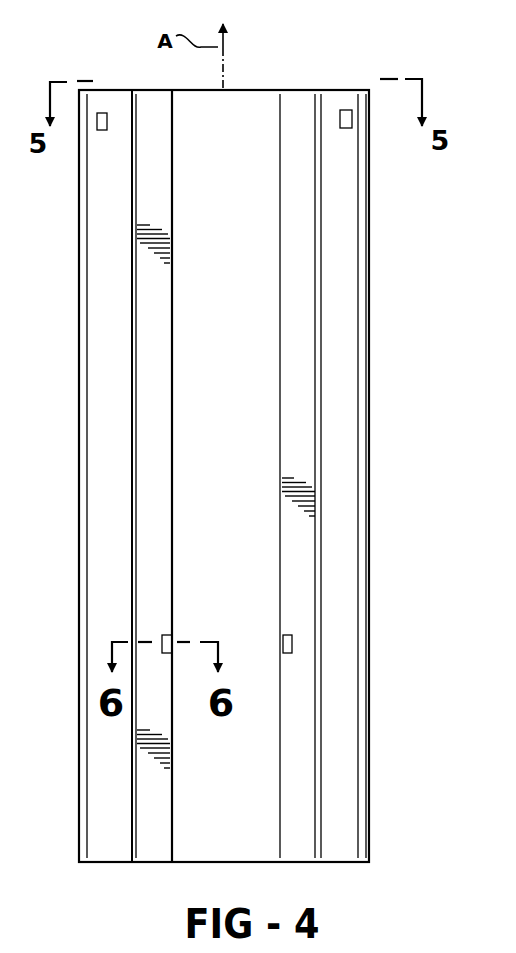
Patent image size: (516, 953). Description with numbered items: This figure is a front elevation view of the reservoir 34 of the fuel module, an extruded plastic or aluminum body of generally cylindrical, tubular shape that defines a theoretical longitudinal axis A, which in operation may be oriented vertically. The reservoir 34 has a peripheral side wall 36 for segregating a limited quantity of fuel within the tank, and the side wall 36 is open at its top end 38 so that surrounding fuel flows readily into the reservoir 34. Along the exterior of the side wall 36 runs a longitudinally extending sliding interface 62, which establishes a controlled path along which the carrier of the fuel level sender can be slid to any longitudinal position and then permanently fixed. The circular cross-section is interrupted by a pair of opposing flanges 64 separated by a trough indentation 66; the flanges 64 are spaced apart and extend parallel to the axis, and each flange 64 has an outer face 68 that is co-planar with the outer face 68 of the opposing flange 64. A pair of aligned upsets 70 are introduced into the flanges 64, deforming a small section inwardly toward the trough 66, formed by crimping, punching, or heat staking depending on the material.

The reservoir 34 is at (77, 393).
The peripheral side wall 36 is at (342, 718).
The top end 38 is at (338, 88).
The sliding interface 62 is at (176, 798).
The flanges 64 is at (172, 402).
The trough indentation 66 is at (238, 526).
The outer face 68 is at (292, 420).
The upsets 70 is at (172, 642).